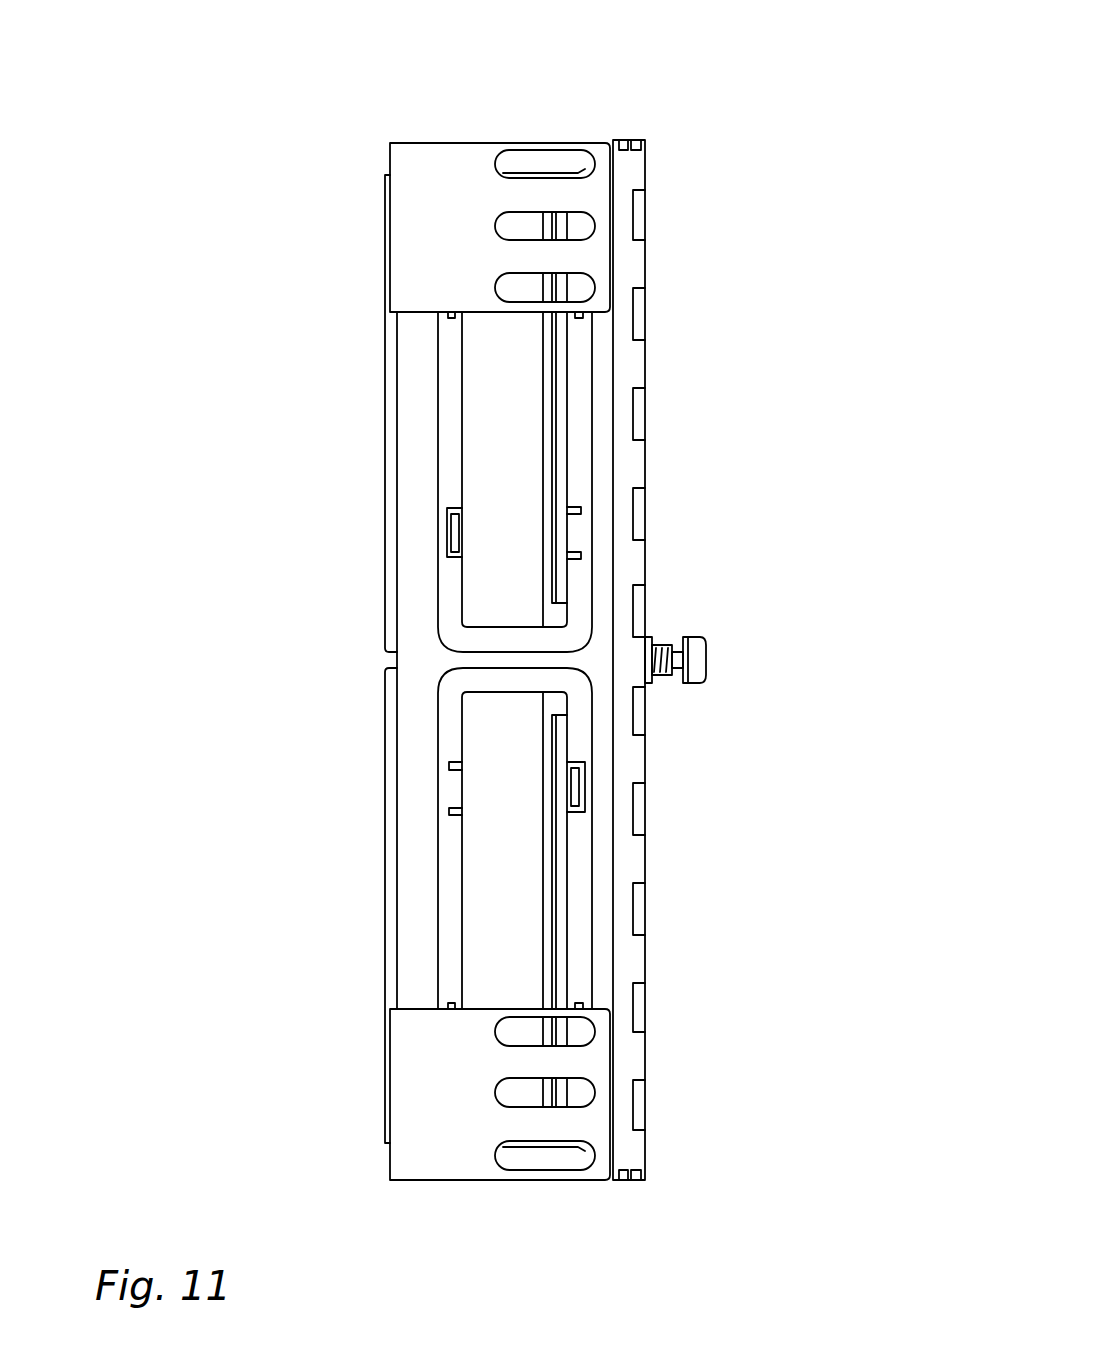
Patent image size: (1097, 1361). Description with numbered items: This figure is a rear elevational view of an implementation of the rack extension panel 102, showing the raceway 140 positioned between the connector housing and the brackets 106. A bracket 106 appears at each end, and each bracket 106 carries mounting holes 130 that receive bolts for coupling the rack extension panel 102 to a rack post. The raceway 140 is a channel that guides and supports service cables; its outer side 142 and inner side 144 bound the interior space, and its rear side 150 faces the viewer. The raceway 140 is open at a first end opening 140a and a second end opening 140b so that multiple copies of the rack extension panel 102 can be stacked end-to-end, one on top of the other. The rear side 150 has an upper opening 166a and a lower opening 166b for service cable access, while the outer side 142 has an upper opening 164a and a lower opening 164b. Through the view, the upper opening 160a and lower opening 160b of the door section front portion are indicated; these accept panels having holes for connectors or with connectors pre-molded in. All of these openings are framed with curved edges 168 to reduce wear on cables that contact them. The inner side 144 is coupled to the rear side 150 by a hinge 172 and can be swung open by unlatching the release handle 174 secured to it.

The rack extension panel 102 is at (823, 52).
The bracket 106 is at (428, 170).
The mounting holes 130 is at (597, 163).
The raceway 140 is at (558, 106).
The first end opening 140a is at (495, 1210).
The second end opening 140b is at (522, 116).
The outer side 142 is at (395, 540).
The inner side 144 is at (645, 483).
The rear side 150 is at (413, 349).
The upper opening 160a is at (517, 469).
The lower opening 160b is at (560, 912).
The upper opening 164a is at (413, 482).
The lower opening 164b is at (413, 838).
The upper opening 166a is at (500, 577).
The lower opening 166b is at (497, 850).
The curved edges 168 is at (383, 458).
The hinge 172 is at (645, 400).
The release handle 174 is at (707, 661).